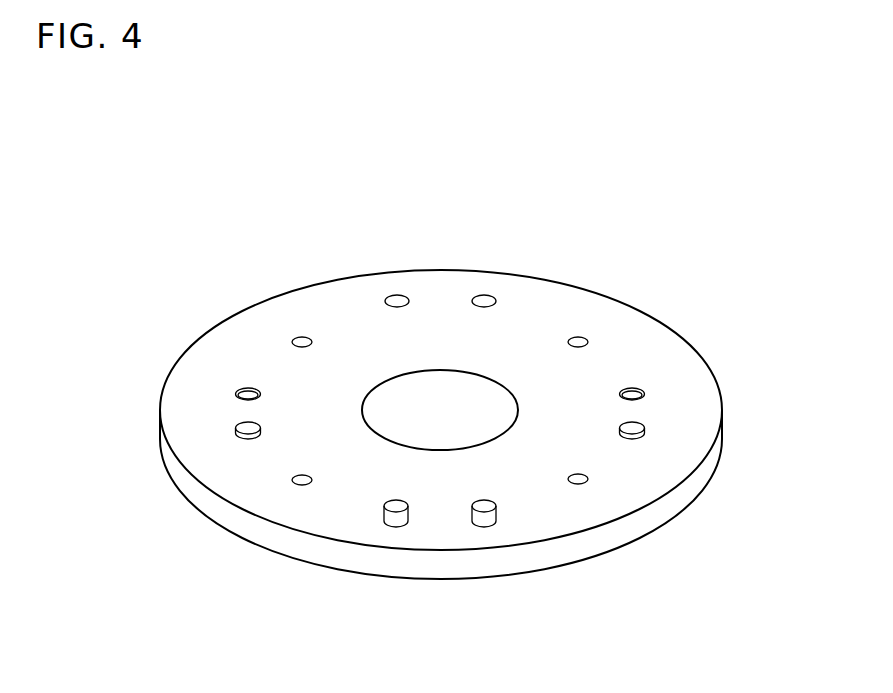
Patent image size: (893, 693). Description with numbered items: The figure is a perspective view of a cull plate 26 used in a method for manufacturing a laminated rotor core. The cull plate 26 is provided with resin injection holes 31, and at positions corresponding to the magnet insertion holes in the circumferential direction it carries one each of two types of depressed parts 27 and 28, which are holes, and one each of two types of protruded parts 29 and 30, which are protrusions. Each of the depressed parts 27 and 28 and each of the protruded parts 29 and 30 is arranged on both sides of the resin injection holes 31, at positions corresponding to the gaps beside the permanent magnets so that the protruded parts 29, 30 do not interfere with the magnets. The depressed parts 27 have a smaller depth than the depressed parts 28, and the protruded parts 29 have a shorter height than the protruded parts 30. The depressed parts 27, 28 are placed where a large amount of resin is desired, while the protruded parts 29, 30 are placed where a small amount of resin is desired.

The cull plate 26 is at (634, 281).
The depressed part 27 is at (247, 391).
The depressed part 28 is at (484, 297).
The protruded part 29 is at (244, 436).
The protruded part 30 is at (483, 520).
The resin injection hole 31 is at (302, 337).